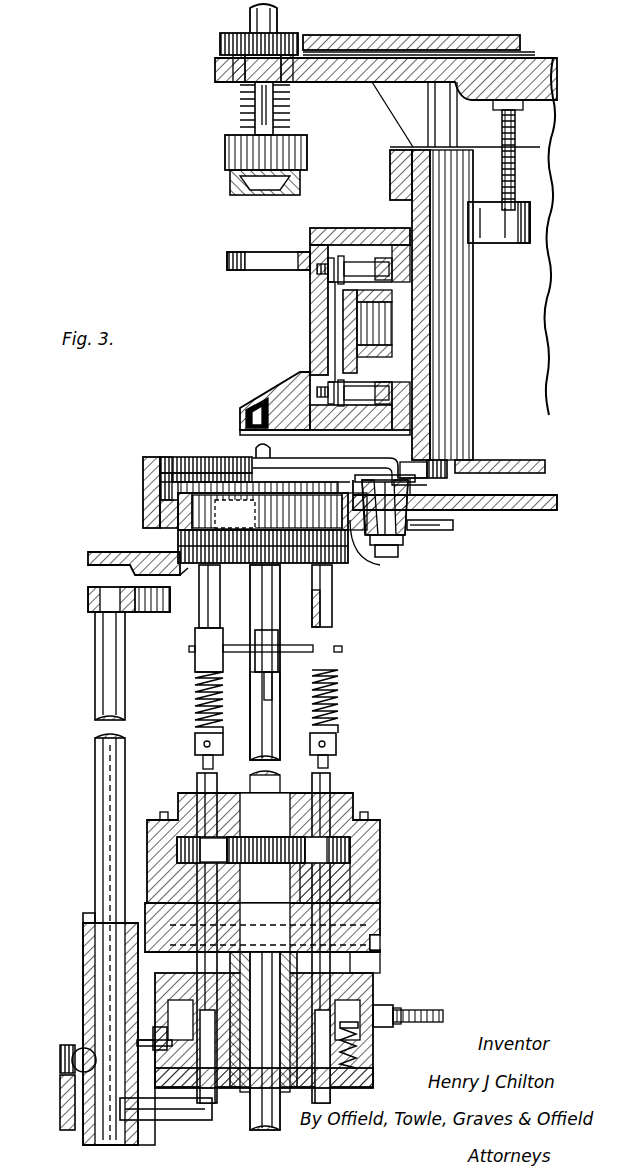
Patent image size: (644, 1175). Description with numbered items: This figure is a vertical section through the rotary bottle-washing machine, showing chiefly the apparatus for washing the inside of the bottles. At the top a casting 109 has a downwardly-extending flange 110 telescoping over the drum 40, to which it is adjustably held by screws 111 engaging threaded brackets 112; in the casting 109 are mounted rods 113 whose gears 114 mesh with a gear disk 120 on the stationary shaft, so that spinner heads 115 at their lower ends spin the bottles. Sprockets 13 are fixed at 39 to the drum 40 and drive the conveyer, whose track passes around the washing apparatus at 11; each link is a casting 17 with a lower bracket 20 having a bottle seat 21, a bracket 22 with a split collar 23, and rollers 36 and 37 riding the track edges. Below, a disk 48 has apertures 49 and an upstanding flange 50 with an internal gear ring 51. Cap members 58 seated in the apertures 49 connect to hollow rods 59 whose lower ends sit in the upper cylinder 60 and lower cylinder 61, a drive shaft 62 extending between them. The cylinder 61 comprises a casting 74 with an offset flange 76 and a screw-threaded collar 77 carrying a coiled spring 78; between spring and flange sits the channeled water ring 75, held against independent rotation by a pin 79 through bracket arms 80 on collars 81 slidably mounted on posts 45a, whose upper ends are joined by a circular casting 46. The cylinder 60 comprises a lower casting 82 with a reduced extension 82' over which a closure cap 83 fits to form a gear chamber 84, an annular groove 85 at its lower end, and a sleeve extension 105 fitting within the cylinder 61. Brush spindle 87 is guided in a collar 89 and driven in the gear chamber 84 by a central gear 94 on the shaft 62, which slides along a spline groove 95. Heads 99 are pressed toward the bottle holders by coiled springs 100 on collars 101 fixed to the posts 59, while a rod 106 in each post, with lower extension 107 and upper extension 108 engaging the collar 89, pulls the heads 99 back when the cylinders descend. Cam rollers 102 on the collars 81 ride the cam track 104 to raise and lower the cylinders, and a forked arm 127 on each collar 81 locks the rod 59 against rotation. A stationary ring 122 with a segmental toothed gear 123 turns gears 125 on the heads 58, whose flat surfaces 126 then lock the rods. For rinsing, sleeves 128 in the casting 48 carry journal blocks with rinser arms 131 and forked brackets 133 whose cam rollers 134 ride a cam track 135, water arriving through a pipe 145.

The conveyer track portion 11 is at (345, 330).
The sprockets 13 is at (352, 228).
The casting 17 is at (318, 352).
The lower bracket 20 is at (242, 414).
The bottle seat 21 is at (265, 400).
The bracket 22 is at (303, 272).
The split collar 23 is at (242, 272).
The roller 36 is at (325, 260).
The roller 37 is at (372, 434).
The fixing of sprockets 39 is at (398, 236).
The drum 40 is at (433, 348).
The posts 45a is at (97, 823).
The circular casting 46 is at (88, 600).
The disk 48 is at (531, 512).
The apertures 49 is at (178, 525).
The annular upstanding flange 50 is at (143, 487).
The internal gear ring 51 is at (166, 458).
The cap members 58 is at (160, 508).
The rods 59 is at (332, 592).
The upper cylinder 60 is at (326, 850).
The lower cylinder 61 is at (373, 978).
The drive shaft 62 is at (281, 707).
The circular casting 74 is at (358, 1052).
The channeled ring 75 is at (380, 1008).
The offset flange 76 is at (380, 965).
The collar 77 is at (374, 1084).
The coiled expansion spring 78 is at (360, 1028).
The pin 79 is at (153, 1035).
The bracket arms 80 is at (138, 1043).
The collars 81 is at (83, 968).
The lower casting 82 is at (296, 923).
The reduced extension 82' is at (377, 881).
The closure cap 83 is at (308, 850).
The gear chamber 84 is at (352, 843).
The annular groove 85 is at (382, 940).
The brush spindle 87 is at (272, 683).
The collar 89 is at (278, 640).
The central gear 94 is at (227, 850).
The spline groove 95 is at (250, 762).
The central head 99 is at (226, 458).
The coiled springs 100 is at (195, 691).
The collars 101 is at (195, 741).
The cam roller 102 is at (62, 1050).
The cam track 104 is at (62, 1090).
The sleeve extension 105 is at (234, 1092).
The rod 106 is at (204, 764).
The right-angled extension 107 is at (330, 1100).
The extension 108 is at (194, 649).
The casting 109 is at (350, 70).
The downwardly-extending flange 110 is at (388, 174).
The screws 111 is at (516, 128).
The threaded brackets 112 is at (532, 222).
The rods 113 is at (280, 20).
The gears 114 is at (228, 38).
The spinner heads 115 is at (240, 190).
The gear disk 120 is at (450, 44).
The ring 122 is at (88, 560).
The segmental toothed gear 123 is at (182, 552).
The gear 125 is at (180, 574).
The flat surfaces 126 is at (382, 566).
The forked arm 127 is at (178, 1120).
The sleeves 128 is at (410, 530).
The arm 131 is at (292, 464).
The forked bracket 133 is at (432, 466).
The cam roller 134 is at (447, 468).
The cam track 135 is at (462, 468).
The pipe 145 is at (455, 527).